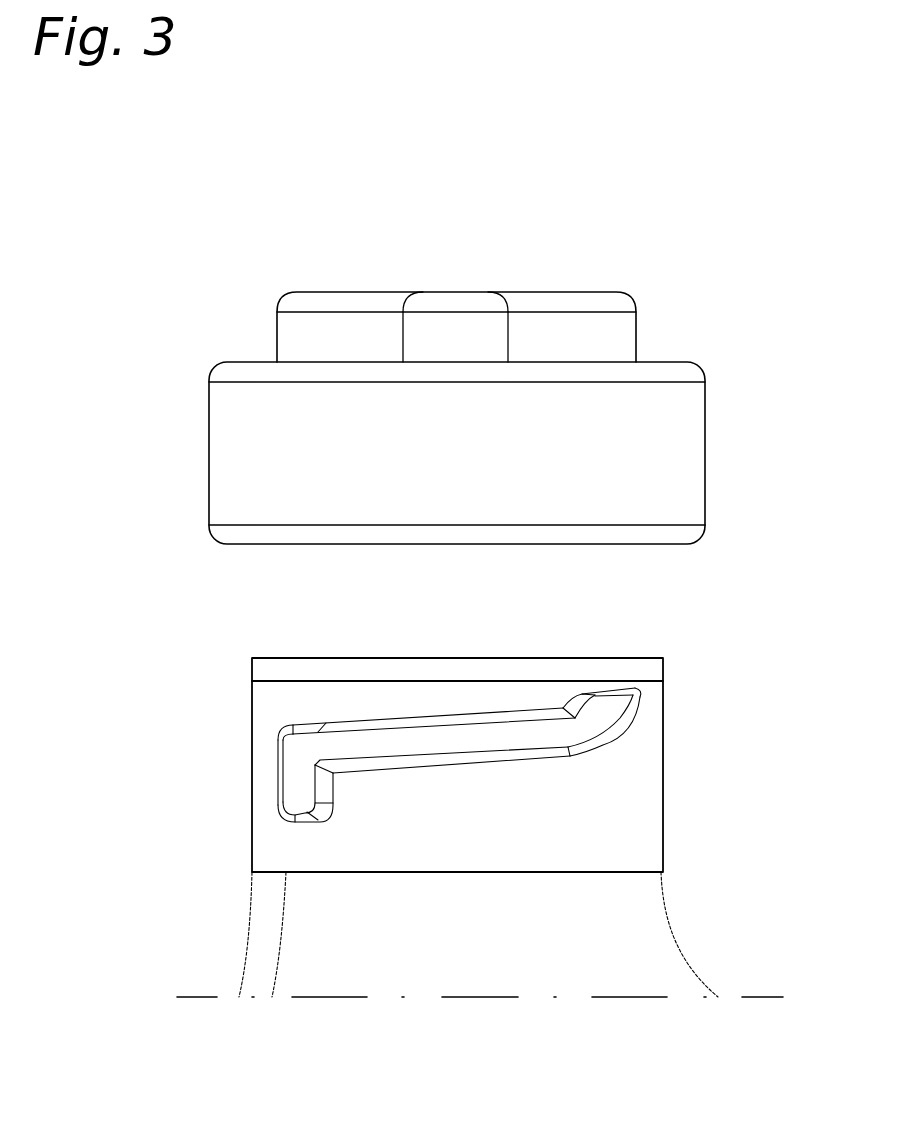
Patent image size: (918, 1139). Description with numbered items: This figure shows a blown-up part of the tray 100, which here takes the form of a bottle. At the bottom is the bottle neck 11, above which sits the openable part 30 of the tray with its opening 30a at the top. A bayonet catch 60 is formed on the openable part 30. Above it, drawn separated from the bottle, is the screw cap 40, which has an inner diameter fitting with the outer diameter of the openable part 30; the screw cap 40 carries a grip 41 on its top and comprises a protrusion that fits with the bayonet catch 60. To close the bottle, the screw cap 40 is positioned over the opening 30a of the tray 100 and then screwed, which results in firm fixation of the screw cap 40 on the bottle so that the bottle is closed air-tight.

The tray 100 is at (481, 1088).
The bottle neck 11 is at (668, 920).
The openable part 30 is at (571, 751).
The opening 30a is at (610, 659).
The screw cap 40 is at (633, 457).
The grip 41 is at (578, 345).
The bayonet catch 60 is at (297, 775).